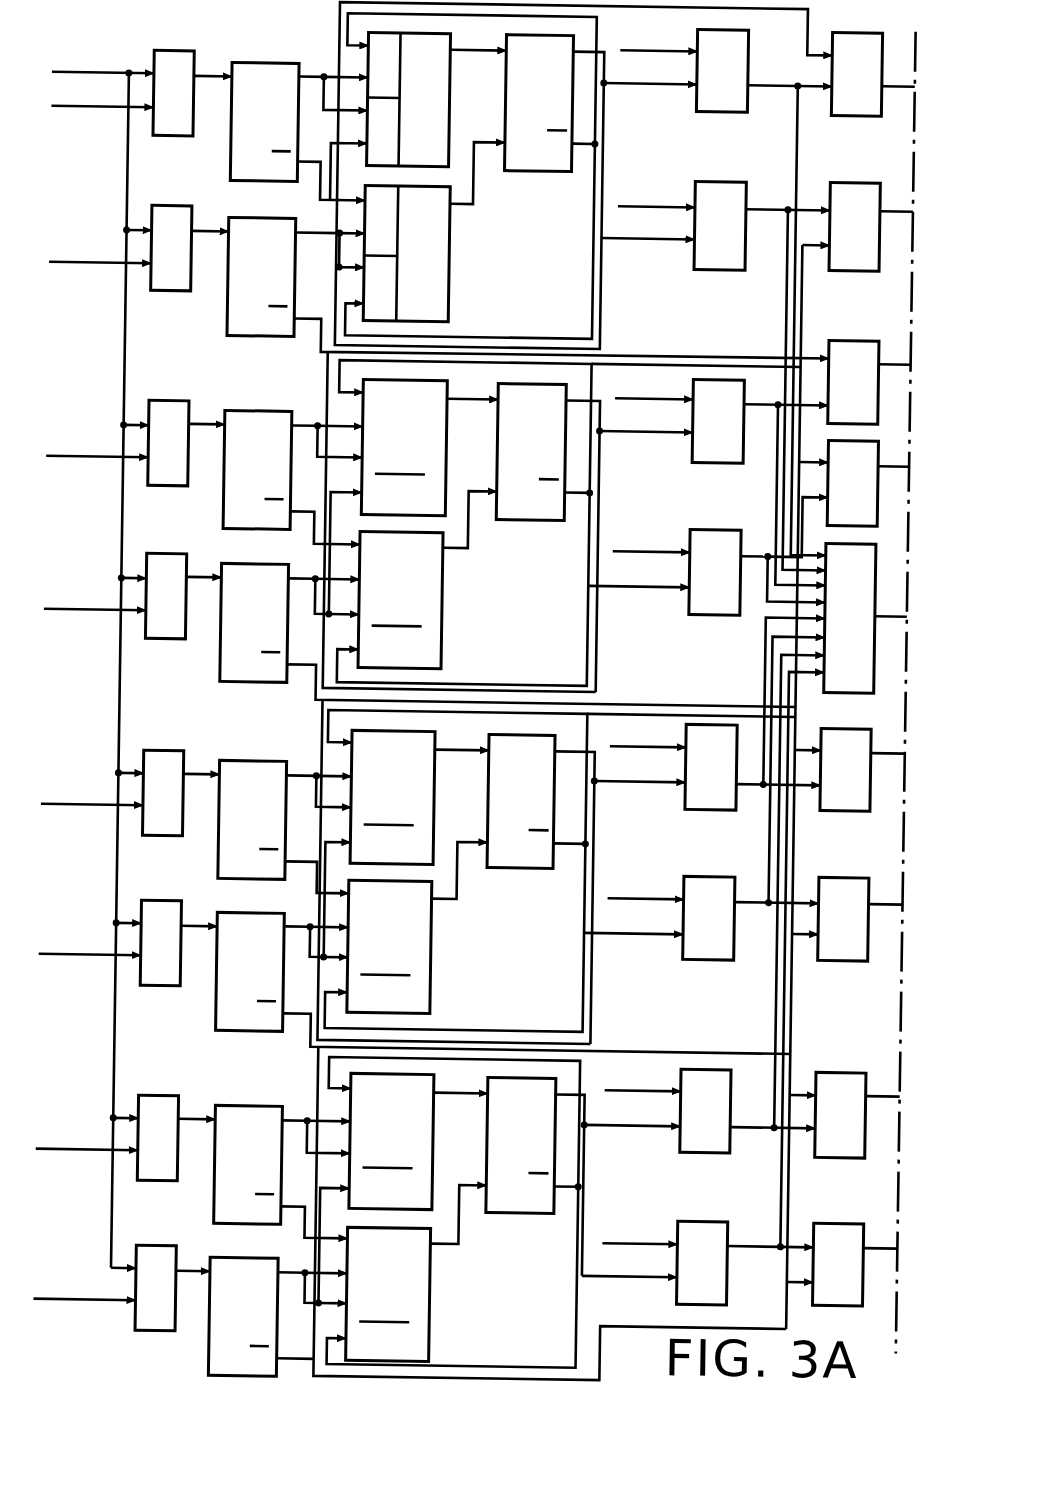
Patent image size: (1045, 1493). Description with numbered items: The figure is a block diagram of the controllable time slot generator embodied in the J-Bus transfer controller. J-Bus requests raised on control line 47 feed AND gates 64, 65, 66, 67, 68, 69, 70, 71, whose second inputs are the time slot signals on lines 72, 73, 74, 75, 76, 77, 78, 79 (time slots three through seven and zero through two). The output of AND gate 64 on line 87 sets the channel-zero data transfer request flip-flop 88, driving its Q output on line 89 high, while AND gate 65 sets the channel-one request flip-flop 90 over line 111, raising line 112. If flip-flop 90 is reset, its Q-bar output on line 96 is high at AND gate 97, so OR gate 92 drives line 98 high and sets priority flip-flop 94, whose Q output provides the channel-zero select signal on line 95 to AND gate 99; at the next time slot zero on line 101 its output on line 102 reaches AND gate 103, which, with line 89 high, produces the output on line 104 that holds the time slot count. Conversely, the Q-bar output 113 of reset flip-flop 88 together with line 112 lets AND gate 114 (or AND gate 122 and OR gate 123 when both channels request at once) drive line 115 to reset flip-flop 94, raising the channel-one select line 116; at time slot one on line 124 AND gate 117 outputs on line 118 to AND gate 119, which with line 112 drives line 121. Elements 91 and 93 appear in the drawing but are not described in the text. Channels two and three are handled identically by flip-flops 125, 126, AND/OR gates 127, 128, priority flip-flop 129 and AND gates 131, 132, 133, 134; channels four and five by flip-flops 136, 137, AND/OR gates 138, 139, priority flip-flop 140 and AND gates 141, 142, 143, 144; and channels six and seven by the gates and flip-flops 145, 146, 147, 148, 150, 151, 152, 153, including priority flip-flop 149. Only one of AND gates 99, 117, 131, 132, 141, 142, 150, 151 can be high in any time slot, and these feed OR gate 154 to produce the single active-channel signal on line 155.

The control line 47 is at (123, 67).
The AND gate 64 is at (176, 133).
The AND gate 65 is at (172, 288).
The AND gate 66 is at (172, 398).
The AND gate 67 is at (172, 551).
The AND gate 68 is at (170, 748).
The AND gate 69 is at (170, 898).
The AND gate 70 is at (170, 1093).
The AND gate 71 is at (168, 1243).
The time slot line 72 is at (78, 107).
The time slot line 73 is at (78, 263).
The time slot line 74 is at (74, 457).
The time slot line 75 is at (66, 610).
The time slot line 76 is at (70, 805).
The time slot line 77 is at (68, 955).
The time slot line 78 is at (70, 1150).
The time slot line 79 is at (62, 1301).
The output line 87 is at (212, 68).
The channel data transfer request flip-flop 88 is at (258, 59).
The Q output line 89 is at (318, 68).
The channel 1 data transfer request flip-flop 90 is at (258, 333).
The AND-OR gate input 91 is at (402, 77).
The OR gate 92 is at (437, 102).
The feedback line 93 is at (340, 5).
The priority flip-flop 94 is at (561, 164).
The channel 0 select line 95 is at (605, 286).
The Q-bar output line 96 is at (328, 352).
The AND gate 97 is at (368, 125).
The output line 98 is at (480, 38).
The AND gate 99 is at (727, 104).
The time slot 0 line 101 is at (682, 80).
The output line 102 is at (781, 66).
The AND gate 103 is at (862, 100).
The output line 104 is at (905, 81).
The output line 111 is at (208, 224).
The Q output line 112 is at (826, 278).
The Q-bar output 113 is at (320, 195).
The AND gate 114 is at (400, 232).
The reset line 115 is at (478, 183).
The channel 1 select line 116 is at (594, 226).
The AND gate 117 is at (714, 261).
The output line 118 is at (777, 192).
The AND gate 119 is at (849, 171).
The output line 121 is at (901, 194).
The AND gate 122 is at (404, 297).
The OR gate 123 is at (443, 262).
The time slot TS1 line 124 is at (683, 190).
The channel 2 data transfer request flip-flop 125 is at (274, 397).
The channel 3 data transfer request flip-flop 126 is at (230, 644).
The AND/OR gate 127 is at (404, 447).
The AND/OR gate 128 is at (453, 635).
The priority flip-flop 129 is at (543, 512).
The AND gate 131 is at (719, 454).
The AND gate 132 is at (720, 607).
The AND gate 133 is at (857, 327).
The AND gate 134 is at (901, 460).
The channel 4 data transfer request flip-flop 136 is at (264, 757).
The channel 5 data transfer request flip-flop 137 is at (231, 1000).
The AND/OR gate 138 is at (392, 797).
The AND/OR gate 139 is at (389, 946).
The priority flip-flop 140 is at (555, 862).
The AND gate 141 is at (722, 801).
The AND gate 142 is at (715, 952).
The AND gate 143 is at (865, 799).
The AND gate 144 is at (866, 950).
The data transfer request flip-flop 145 is at (253, 1102).
The data transfer request flip-flop 146 is at (229, 1340).
The AND/OR gate 147 is at (391, 1141).
The AND/OR gate 148 is at (388, 1294).
The priority flip-flop 149 is at (527, 1205).
The AND gate 150 is at (748, 1142).
The AND gate 151 is at (721, 1211).
The AND gate 152 is at (854, 1058).
The AND gate 153 is at (855, 1211).
The OR gate 154 is at (848, 682).
The output line 155 is at (905, 597).